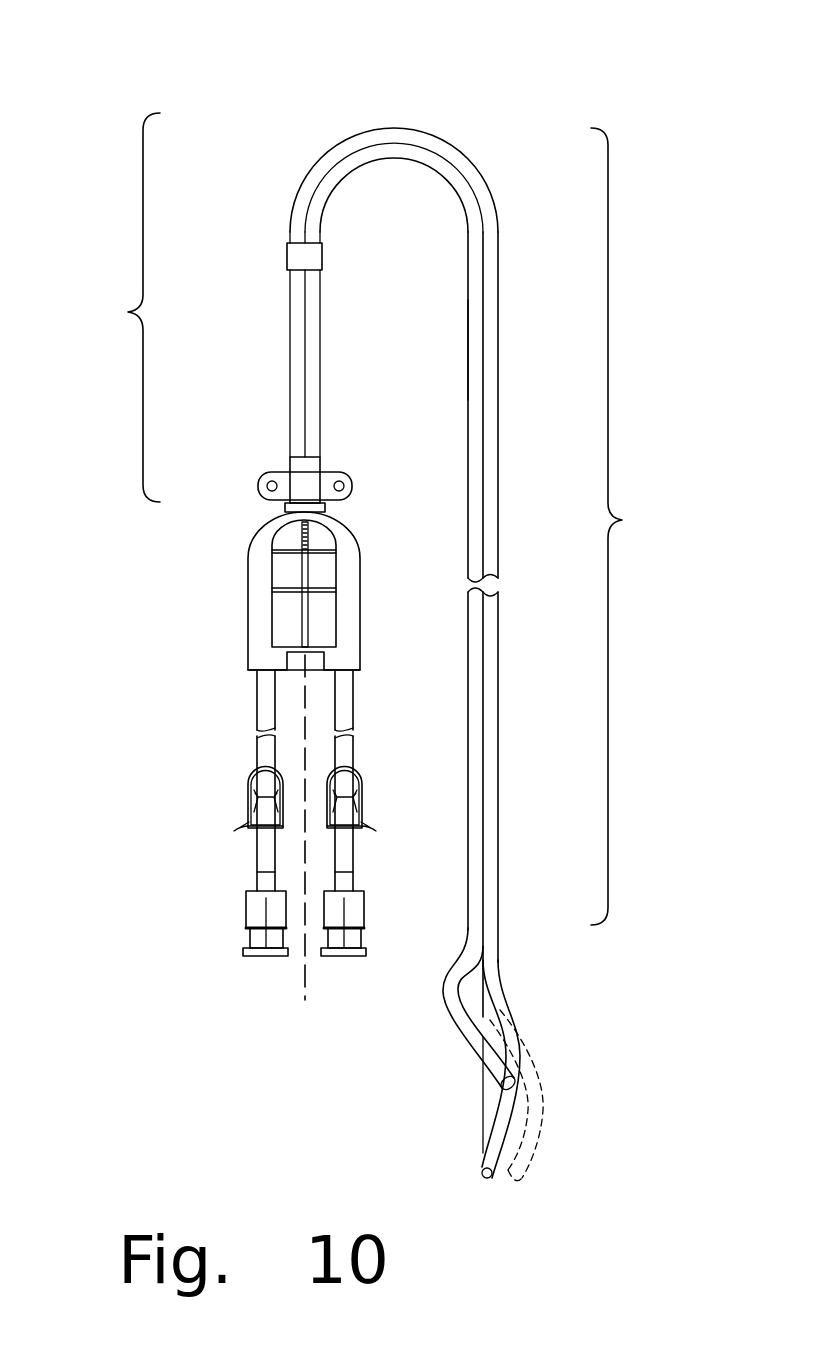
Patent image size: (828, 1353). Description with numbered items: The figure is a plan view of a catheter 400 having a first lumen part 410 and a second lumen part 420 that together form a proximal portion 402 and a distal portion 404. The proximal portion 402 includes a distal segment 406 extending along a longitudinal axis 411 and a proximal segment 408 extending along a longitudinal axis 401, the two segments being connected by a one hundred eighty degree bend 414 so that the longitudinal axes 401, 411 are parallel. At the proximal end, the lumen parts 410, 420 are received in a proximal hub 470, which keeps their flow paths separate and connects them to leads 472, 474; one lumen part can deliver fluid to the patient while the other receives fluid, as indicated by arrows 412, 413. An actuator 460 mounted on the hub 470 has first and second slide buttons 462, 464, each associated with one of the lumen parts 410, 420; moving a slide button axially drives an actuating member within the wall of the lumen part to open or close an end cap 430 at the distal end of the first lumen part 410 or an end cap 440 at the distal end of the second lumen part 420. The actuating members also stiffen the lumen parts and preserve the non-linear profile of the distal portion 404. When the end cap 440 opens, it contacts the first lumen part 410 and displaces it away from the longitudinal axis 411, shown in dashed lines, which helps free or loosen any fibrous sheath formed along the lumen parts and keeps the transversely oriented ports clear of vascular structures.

The catheter 400 is at (236, 103).
The longitudinal axis 401 is at (305, 978).
The proximal portion 402 is at (278, 281).
The distal portion 404 is at (576, 1133).
The distal segment 406 is at (632, 526).
The proximal segment 408 is at (117, 307).
The first lumen part 410 is at (500, 472).
The longitudinal axis 411 is at (497, 1013).
The arrow 412 is at (266, 912).
The arrow 413 is at (344, 912).
The 180 degree bend 414 is at (430, 146).
The second lumen part 420 is at (464, 320).
The end cap 430 is at (488, 1181).
The end cap 440 is at (500, 1094).
The actuator 460 is at (270, 565).
The first slide button 462 is at (282, 618).
The second slide button 464 is at (326, 629).
The proximal hub 470 is at (240, 669).
The lead 472 is at (257, 848).
The lead 474 is at (355, 855).